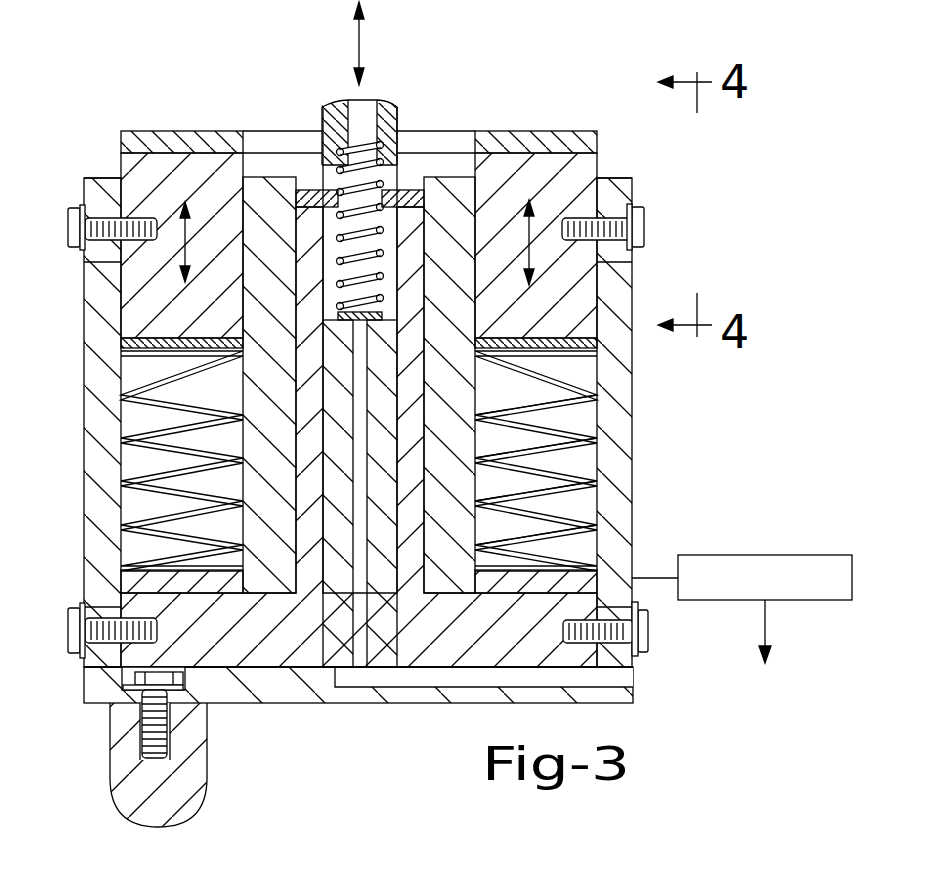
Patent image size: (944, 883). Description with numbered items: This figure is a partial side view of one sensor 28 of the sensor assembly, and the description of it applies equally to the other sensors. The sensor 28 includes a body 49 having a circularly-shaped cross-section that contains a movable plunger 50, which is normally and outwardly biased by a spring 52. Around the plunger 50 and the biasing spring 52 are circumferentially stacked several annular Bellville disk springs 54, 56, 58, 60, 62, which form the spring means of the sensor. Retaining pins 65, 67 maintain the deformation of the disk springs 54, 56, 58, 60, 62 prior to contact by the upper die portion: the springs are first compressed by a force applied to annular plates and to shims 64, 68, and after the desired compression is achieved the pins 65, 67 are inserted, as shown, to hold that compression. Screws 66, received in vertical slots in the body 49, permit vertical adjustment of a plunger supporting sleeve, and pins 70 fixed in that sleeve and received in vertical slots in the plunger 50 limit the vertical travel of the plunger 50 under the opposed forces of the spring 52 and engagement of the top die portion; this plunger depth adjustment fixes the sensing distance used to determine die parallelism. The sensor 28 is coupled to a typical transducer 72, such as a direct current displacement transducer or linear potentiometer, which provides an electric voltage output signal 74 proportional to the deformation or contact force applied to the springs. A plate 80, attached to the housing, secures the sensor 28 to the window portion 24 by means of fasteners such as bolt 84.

The window portion 24 is at (163, 798).
The sensor 28 is at (735, 236).
The body 49 is at (85, 392).
The plunger 50 is at (380, 117).
The spring 52 is at (297, 190).
The Bellville disk spring 54 is at (580, 373).
The Bellville disk spring 56 is at (573, 422).
The Bellville disk spring 58 is at (583, 465).
The Bellville disk spring 60 is at (587, 505).
The Bellville disk spring 62 is at (580, 550).
The shim 64 is at (600, 303).
The retaining pin 65 is at (647, 230).
The screw 66 is at (80, 608).
The retaining pin 67 is at (68, 228).
The shim 68 is at (597, 352).
The pin 70 is at (413, 197).
The transducer 72 is at (817, 555).
The electric voltage output signal 74 is at (767, 617).
The plate 80 is at (315, 703).
The bolt 84 is at (157, 723).